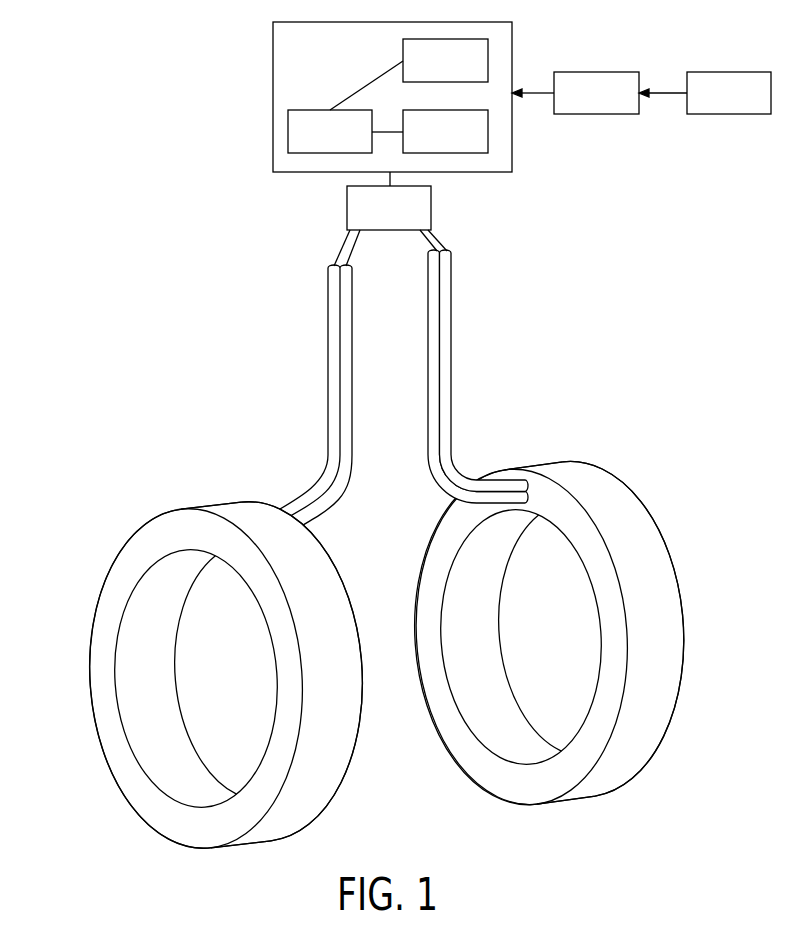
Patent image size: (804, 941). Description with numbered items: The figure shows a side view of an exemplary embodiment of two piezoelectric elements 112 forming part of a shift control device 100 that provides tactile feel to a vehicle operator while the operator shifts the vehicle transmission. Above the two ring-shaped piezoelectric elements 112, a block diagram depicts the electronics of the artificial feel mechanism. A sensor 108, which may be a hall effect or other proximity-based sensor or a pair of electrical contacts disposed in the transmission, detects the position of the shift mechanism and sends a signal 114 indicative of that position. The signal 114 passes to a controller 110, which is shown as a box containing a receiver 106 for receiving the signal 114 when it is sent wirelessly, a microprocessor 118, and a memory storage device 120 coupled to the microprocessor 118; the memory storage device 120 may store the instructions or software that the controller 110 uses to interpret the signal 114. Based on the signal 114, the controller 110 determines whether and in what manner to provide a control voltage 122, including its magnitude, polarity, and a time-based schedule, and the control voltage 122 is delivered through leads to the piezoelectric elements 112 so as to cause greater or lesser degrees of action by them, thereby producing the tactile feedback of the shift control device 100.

The shift control device 100 is at (361, 531).
The receiver 106 is at (431, 74).
The sensor 108 is at (714, 105).
The controller 110 is at (318, 76).
The piezoelectric element 112 is at (187, 510).
The signal 114 is at (583, 105).
The microprocessor 118 is at (318, 145).
The memory storage device 120 is at (431, 145).
The control voltage 122 is at (376, 220).